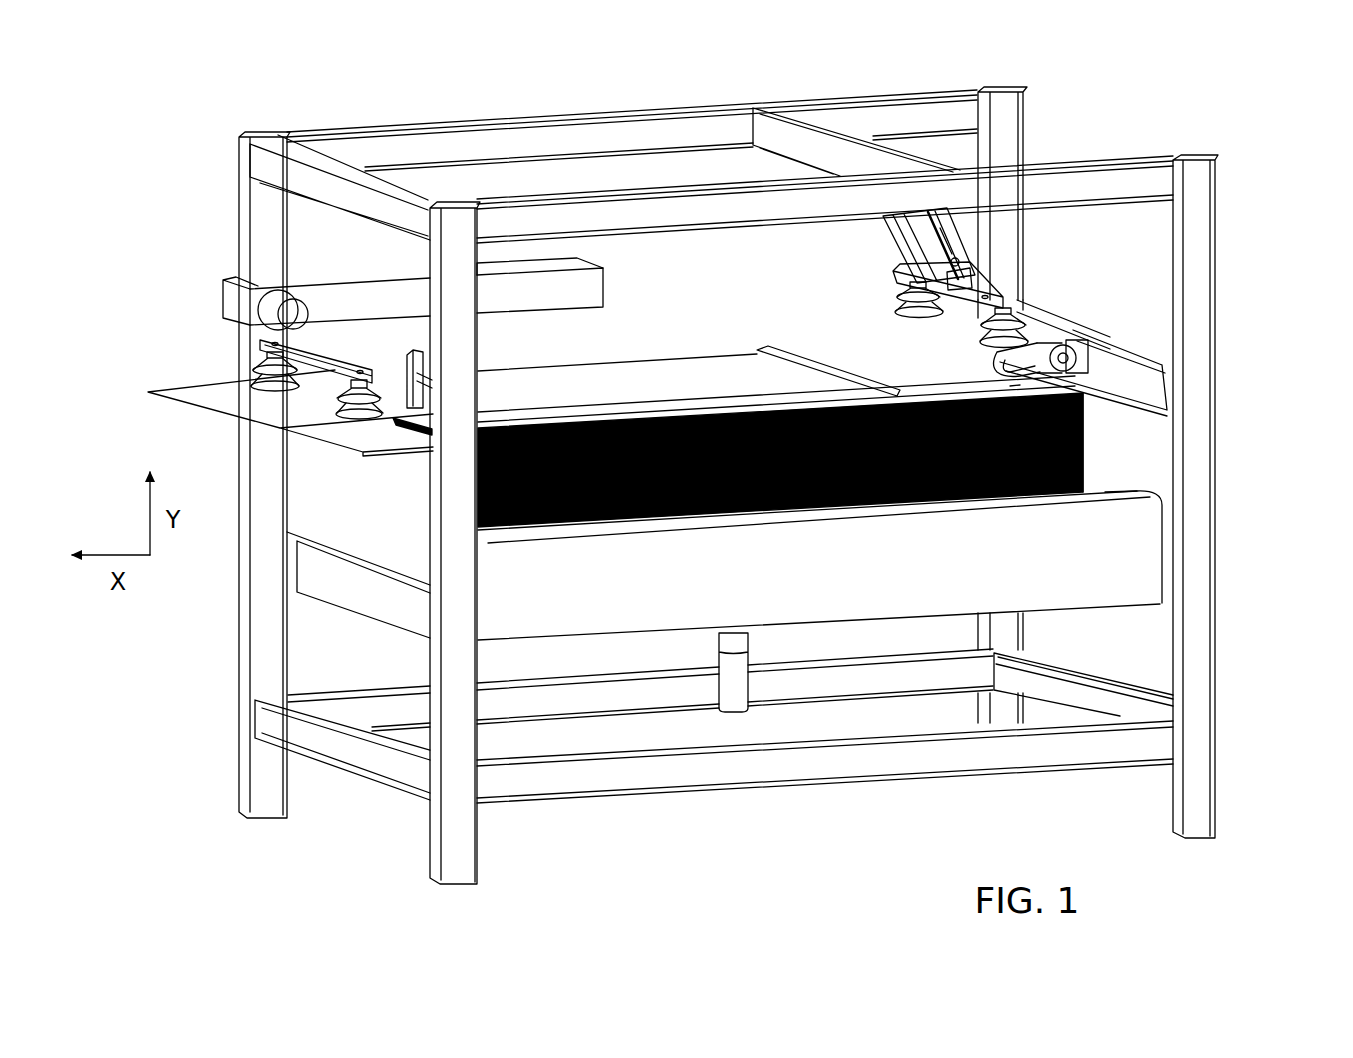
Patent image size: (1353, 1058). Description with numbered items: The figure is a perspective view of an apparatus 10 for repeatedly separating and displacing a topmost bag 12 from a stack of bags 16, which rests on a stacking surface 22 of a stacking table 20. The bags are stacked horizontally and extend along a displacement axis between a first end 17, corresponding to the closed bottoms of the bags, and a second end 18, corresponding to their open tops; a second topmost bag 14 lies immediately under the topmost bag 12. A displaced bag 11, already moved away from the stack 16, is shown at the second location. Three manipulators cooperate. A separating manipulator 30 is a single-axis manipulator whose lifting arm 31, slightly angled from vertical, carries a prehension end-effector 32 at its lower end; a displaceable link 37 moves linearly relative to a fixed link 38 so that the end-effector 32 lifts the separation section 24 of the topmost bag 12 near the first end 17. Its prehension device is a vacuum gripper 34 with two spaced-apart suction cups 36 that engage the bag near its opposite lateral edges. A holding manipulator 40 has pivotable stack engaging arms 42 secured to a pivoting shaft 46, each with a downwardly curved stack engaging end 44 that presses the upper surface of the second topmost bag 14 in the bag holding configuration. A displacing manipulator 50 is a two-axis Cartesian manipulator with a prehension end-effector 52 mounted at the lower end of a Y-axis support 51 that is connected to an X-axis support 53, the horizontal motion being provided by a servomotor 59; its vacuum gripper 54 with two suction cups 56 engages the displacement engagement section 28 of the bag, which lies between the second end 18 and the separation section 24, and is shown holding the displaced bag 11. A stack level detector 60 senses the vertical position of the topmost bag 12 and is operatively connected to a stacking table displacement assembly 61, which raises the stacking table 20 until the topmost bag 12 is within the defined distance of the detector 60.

The apparatus 10 is at (1305, 128).
The displaced bag 11 is at (636, 380).
The topmost bag 12 is at (823, 357).
The second topmost bag 14 is at (1055, 388).
The stack of bags 16 is at (710, 515).
The first end 17 is at (1086, 440).
The second end 18 is at (412, 435).
The stacking table 20 is at (1140, 560).
The stacking surface 22 is at (1105, 491).
The separation section 24 is at (897, 313).
The displacement engagement section 28 is at (315, 385).
The separating manipulator 30 is at (993, 255).
The lifting arm 31 is at (960, 208).
The prehension end-effector 32 is at (1030, 298).
The vacuum gripper 34 is at (980, 352).
The suction cups 36 is at (985, 338).
The displaceable link 37 is at (962, 277).
The fixed link 38 is at (920, 225).
The holding manipulator 40 is at (1068, 338).
The pivotable stack engaging arms 42 is at (1037, 348).
The stack engaging end 44 is at (1020, 385).
The pivoting shaft 46 is at (1082, 352).
The displacing manipulator 50 is at (208, 298).
The Y-axis support 51 is at (327, 340).
The prehension end-effector 52 is at (247, 370).
The X-axis support 53 is at (540, 290).
The vacuum gripper 54 is at (340, 423).
The suction cups 56 is at (340, 404).
The servomotor 59 is at (295, 308).
The stack level detector 60 is at (418, 367).
The stacking table displacement assembly 61 is at (740, 686).